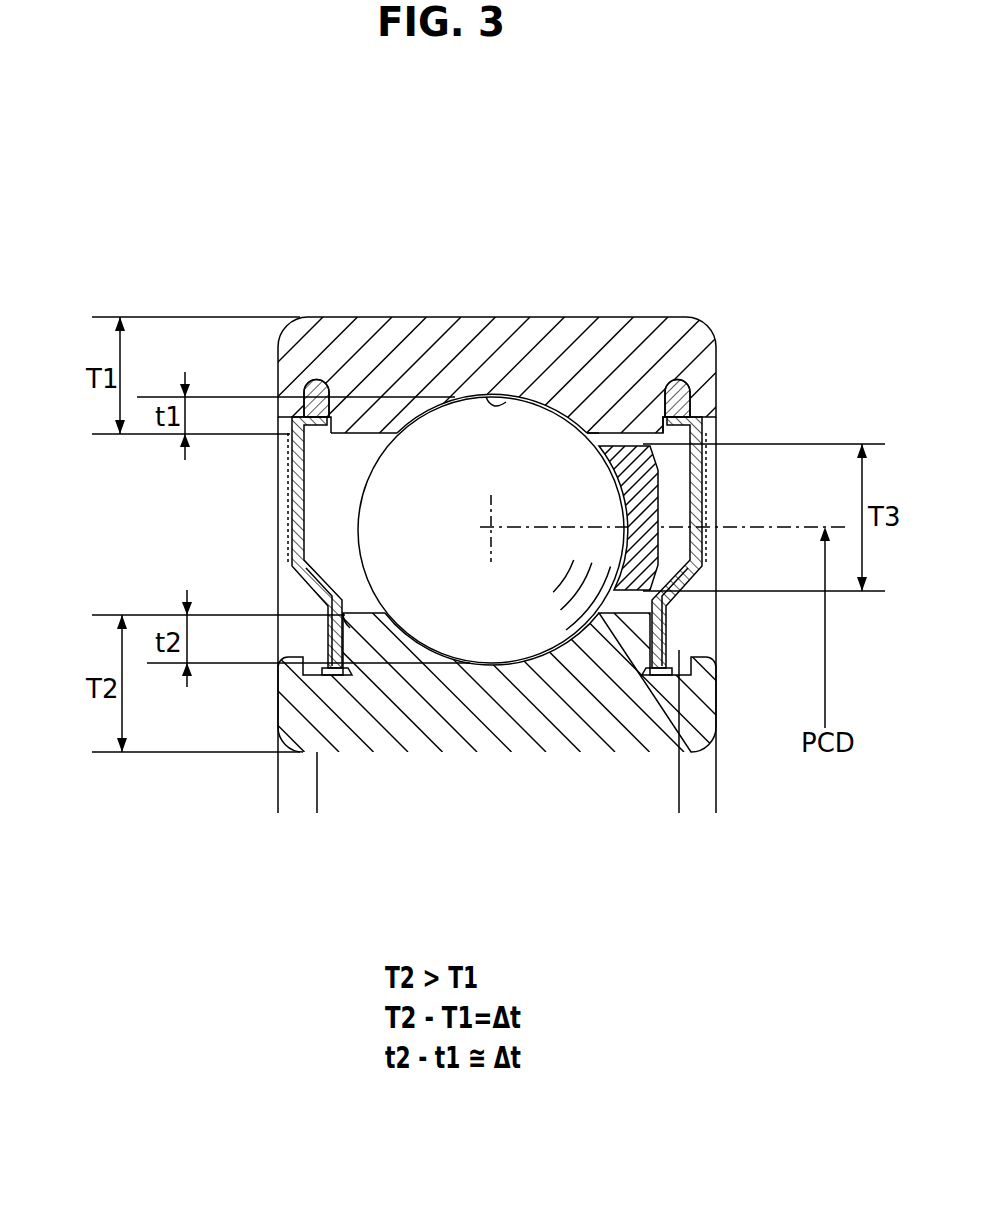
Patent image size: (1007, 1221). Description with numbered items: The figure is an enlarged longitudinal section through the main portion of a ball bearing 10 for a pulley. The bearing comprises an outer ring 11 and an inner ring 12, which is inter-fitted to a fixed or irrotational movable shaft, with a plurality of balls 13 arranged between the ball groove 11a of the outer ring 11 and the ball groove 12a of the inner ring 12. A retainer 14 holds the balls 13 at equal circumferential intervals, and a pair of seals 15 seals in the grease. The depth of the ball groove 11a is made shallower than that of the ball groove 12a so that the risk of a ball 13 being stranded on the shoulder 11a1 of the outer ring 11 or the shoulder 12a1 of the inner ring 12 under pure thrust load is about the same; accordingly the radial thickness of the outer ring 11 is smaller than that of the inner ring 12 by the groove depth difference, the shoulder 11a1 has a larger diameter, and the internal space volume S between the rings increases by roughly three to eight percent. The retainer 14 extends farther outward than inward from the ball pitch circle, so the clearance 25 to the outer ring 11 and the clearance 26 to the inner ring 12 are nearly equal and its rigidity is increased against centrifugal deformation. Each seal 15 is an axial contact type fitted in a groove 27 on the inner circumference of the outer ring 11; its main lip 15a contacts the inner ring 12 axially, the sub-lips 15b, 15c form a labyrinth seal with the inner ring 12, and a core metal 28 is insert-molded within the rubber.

The ball bearing 10 is at (662, 236).
The outer ring 11 is at (419, 305).
The ball groove of outer ring 11a is at (497, 396).
The shoulder of outer ring 11a1 is at (700, 413).
The inner ring 12 is at (430, 764).
The ball groove of inner ring 12a is at (500, 652).
The shoulder of inner ring 12a1 is at (342, 606).
The ball 13 is at (525, 617).
The retainer 14 is at (655, 488).
The seal 15 is at (278, 527).
The main lip 15a is at (327, 672).
The sub-lip 15b is at (306, 662).
The sub-lip 15c is at (333, 620).
The clearance 25 is at (585, 430).
The clearance 26 is at (627, 613).
The groove 27 is at (317, 385).
The core metal 28 is at (295, 480).
The internal space volume S is at (312, 476).